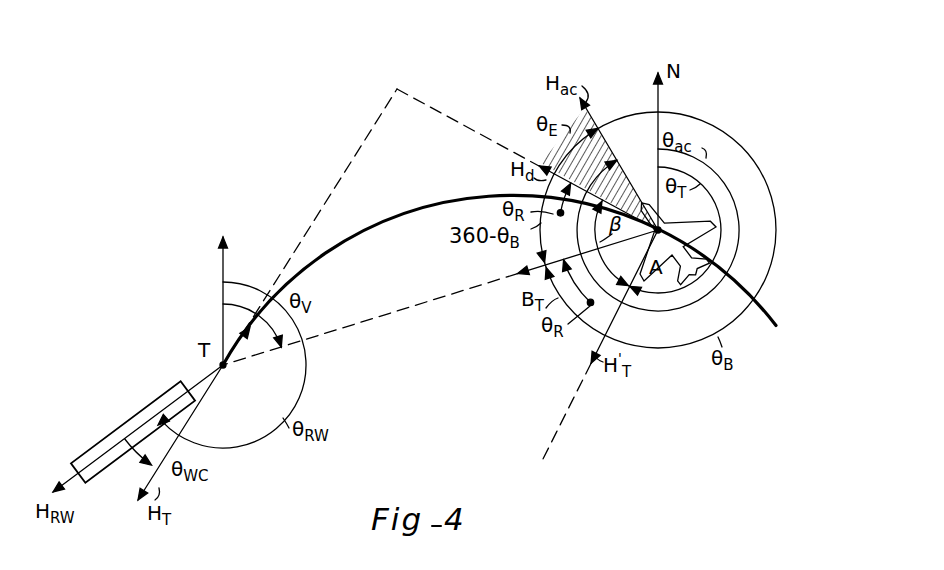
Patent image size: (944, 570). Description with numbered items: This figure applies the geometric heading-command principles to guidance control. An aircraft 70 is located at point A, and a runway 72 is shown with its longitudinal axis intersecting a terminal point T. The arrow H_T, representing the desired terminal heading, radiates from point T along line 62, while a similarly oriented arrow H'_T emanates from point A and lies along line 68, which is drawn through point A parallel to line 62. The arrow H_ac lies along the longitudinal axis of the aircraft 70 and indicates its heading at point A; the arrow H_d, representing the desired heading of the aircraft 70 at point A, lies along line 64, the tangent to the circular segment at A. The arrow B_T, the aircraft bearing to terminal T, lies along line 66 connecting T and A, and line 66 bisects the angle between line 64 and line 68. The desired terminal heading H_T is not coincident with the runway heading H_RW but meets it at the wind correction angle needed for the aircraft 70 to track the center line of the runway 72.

The line 62 is at (352, 160).
The line 64 is at (462, 124).
The line 66 is at (429, 303).
The line 68 is at (566, 420).
The aircraft 70 is at (685, 230).
The runway 72 is at (116, 428).